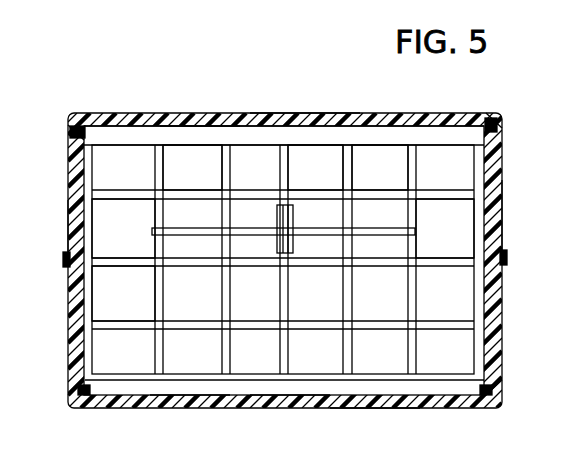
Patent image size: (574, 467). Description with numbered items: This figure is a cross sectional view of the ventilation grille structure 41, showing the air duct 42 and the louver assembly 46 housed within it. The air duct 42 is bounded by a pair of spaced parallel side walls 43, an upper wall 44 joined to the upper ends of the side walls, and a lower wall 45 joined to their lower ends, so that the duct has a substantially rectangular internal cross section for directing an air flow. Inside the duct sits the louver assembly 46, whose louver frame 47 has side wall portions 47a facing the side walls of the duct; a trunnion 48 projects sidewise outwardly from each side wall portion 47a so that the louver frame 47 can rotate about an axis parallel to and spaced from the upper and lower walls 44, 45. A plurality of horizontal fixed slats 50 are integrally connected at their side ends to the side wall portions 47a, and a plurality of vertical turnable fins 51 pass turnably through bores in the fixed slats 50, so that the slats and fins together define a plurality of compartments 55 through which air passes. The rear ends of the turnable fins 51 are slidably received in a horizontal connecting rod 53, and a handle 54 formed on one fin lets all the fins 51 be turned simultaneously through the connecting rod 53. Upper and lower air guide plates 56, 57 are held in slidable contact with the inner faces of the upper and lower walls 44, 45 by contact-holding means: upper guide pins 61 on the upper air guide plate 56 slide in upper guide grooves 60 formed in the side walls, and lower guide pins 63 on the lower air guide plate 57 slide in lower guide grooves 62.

The ventilation grille structure 41 is at (376, 402).
The air duct 42 is at (397, 113).
The side wall 43 is at (498, 218).
The upper wall 44 is at (305, 120).
The lower wall 45 is at (291, 407).
The louver assembly 46 is at (356, 313).
The louver frame 47 is at (101, 309).
The side wall portion 47a is at (472, 222).
The trunnion 48 is at (508, 258).
The horizontal fixed slat 50 is at (314, 198).
The vertical turnable fin 51 is at (222, 168).
The horizontal connecting rod 53 is at (386, 228).
The handle 54 is at (293, 220).
The compartment 55 is at (427, 160).
The upper air guide plate 56 is at (196, 133).
The lower air guide plate 57 is at (188, 385).
The upper guide groove 60 is at (86, 131).
The upper guide pin 61 is at (70, 140).
The lower guide groove 62 is at (92, 389).
The lower guide pin 63 is at (73, 396).